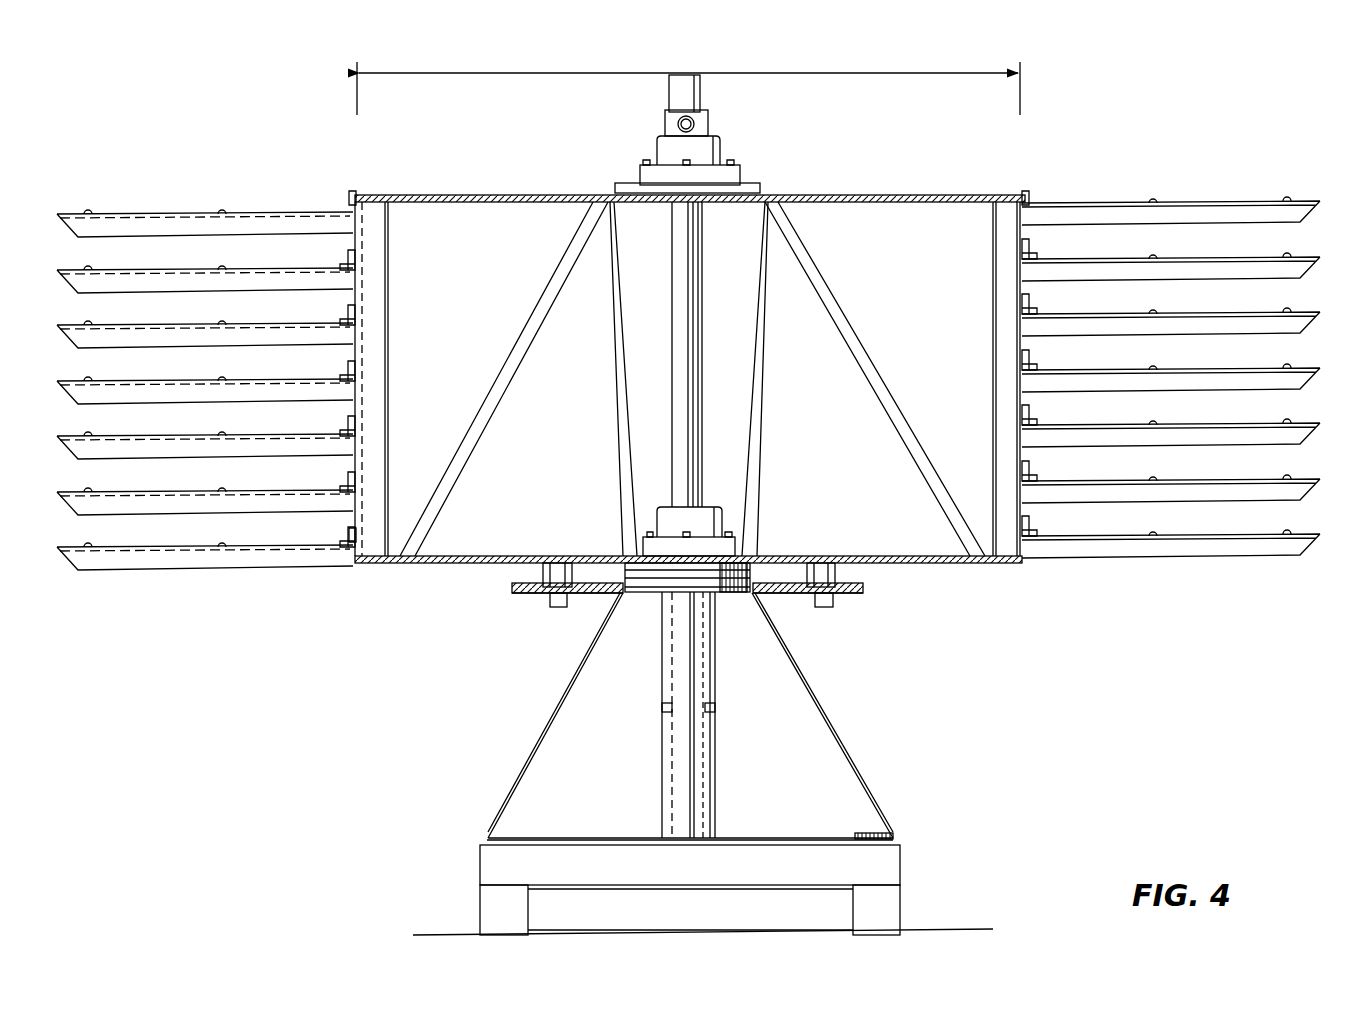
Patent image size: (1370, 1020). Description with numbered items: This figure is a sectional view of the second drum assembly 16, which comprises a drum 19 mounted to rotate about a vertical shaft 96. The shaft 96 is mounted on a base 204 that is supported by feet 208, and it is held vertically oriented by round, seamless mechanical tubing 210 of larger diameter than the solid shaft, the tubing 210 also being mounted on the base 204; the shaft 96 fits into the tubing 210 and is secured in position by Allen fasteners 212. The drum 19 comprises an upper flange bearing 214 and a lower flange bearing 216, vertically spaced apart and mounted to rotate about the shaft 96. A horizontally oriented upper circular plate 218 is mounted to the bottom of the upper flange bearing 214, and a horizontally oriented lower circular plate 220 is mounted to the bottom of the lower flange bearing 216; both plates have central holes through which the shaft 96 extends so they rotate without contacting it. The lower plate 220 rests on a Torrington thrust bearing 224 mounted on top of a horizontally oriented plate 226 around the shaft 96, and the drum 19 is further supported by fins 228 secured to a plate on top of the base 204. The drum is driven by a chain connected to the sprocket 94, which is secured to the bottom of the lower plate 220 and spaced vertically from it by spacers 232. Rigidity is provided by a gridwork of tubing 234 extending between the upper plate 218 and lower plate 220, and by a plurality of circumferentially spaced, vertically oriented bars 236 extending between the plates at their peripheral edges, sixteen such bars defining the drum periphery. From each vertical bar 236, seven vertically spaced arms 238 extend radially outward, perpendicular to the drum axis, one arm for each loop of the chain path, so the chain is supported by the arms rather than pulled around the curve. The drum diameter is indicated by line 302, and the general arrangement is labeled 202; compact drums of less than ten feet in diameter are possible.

The drum diameter line 302 is at (497, 74).
The shaft 96 is at (702, 100).
The upper flange bearing 214 is at (720, 150).
The upper circular plate 218 is at (450, 195).
The rotor assembly 202 is at (922, 172).
The tubing 234 is at (602, 348).
The arms 238 is at (1300, 323).
The drum 19 is at (340, 466).
The lower circular plate 220 is at (435, 556).
The lower flange bearing 216 is at (722, 520).
The thrust bearing 224 is at (758, 556).
The spacers 232 is at (528, 577).
The vertical bars 236 is at (373, 548).
The sprocket 94 is at (522, 600).
The plate 226 is at (758, 605).
The Allen fasteners 212 is at (708, 710).
The mechanical tubing 210 is at (716, 758).
The fins 228 is at (690, 778).
The second drum assembly 16 is at (455, 750).
The base 204 is at (900, 856).
The feet 208 is at (490, 900).